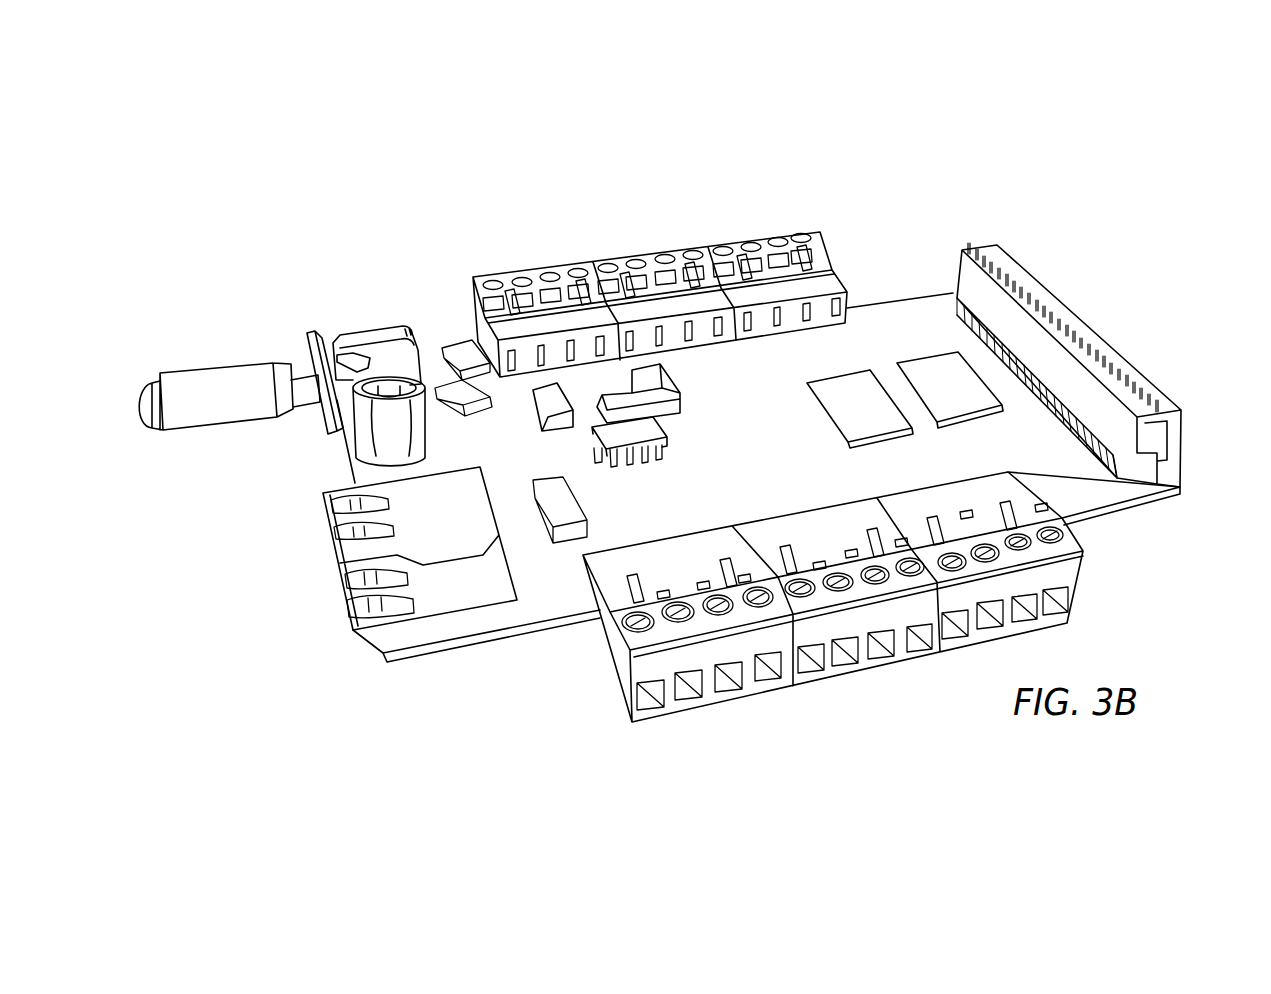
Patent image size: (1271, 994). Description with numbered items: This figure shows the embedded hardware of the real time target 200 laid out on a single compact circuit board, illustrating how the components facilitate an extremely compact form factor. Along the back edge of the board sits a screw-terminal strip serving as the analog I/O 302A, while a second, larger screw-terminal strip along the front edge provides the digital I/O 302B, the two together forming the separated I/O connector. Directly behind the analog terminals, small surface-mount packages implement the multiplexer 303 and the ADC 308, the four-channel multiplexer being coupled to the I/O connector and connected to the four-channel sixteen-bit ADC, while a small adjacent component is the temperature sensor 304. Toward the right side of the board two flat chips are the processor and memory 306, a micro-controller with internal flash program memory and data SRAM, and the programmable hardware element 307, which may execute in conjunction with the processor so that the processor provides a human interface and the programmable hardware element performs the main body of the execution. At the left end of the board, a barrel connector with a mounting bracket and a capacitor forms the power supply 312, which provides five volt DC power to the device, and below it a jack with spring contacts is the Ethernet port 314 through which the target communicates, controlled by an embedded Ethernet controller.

The real time target 200 is at (444, 127).
The analog I/O 302A is at (795, 280).
The digital I/O 302B is at (1073, 566).
The multiplexer 303 is at (647, 312).
The ADC 308 is at (655, 372).
The temperature sensor 304 is at (542, 390).
The processor and memory 306 is at (875, 393).
The programmable hardware element 307 is at (922, 373).
The power supply 312 is at (355, 337).
The Ethernet port 314 is at (347, 520).